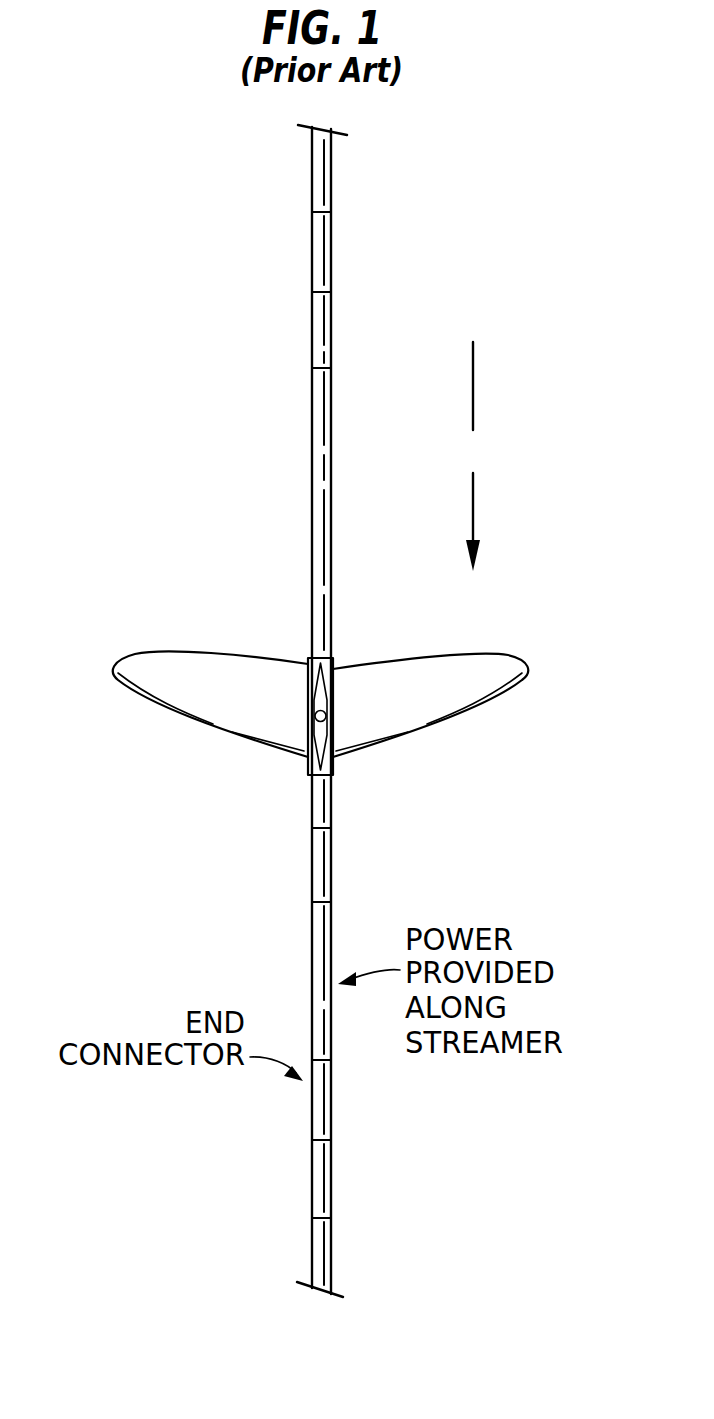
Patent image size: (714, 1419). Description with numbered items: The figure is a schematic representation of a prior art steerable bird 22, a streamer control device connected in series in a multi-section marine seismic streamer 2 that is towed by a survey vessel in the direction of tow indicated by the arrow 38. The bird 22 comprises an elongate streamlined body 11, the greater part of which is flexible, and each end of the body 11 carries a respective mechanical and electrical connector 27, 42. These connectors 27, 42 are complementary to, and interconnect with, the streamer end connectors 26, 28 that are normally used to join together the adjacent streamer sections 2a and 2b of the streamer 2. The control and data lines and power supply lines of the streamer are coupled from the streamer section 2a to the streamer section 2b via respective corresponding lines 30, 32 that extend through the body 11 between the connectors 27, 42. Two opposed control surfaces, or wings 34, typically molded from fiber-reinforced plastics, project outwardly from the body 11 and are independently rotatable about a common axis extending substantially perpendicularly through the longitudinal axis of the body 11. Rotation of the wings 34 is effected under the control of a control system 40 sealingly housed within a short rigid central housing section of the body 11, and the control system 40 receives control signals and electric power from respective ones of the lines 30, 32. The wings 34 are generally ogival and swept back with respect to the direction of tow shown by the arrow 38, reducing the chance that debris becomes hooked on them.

The multi-section marine seismic streamer 2 is at (288, 155).
The streamer section 2a is at (332, 1245).
The streamer section 2b is at (332, 165).
The elongate streamlined body 11 is at (331, 560).
The steerable bird 22 is at (190, 477).
The streamer end connector 26 is at (312, 1105).
The mechanical and electrical connector 27 is at (312, 850).
The streamer end connector 28 is at (312, 320).
The line 30 is at (312, 1178).
The line 32 is at (312, 250).
The wings 34 is at (152, 693).
The arrow indicating direction of tow 38 is at (474, 456).
The control system 40 is at (306, 715).
The mechanical and electrical connector 42 is at (312, 455).